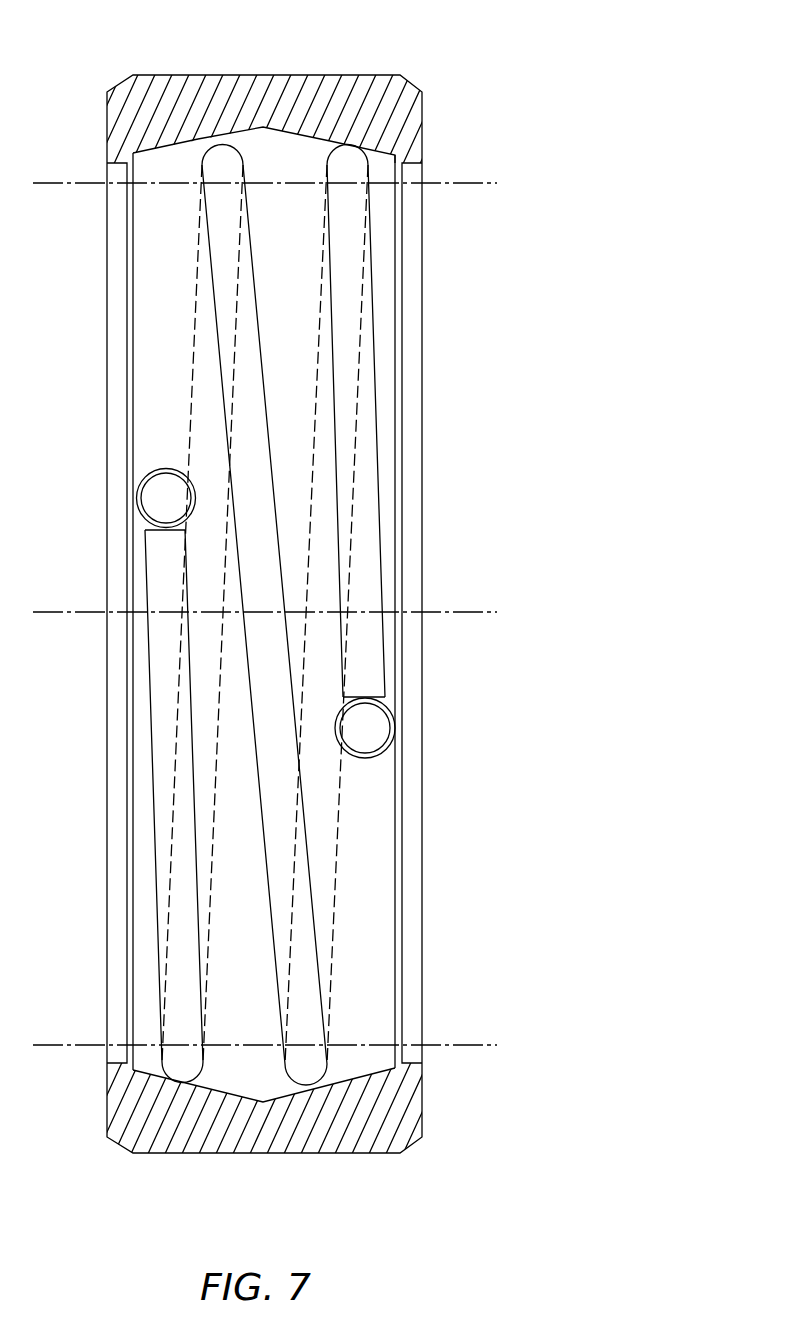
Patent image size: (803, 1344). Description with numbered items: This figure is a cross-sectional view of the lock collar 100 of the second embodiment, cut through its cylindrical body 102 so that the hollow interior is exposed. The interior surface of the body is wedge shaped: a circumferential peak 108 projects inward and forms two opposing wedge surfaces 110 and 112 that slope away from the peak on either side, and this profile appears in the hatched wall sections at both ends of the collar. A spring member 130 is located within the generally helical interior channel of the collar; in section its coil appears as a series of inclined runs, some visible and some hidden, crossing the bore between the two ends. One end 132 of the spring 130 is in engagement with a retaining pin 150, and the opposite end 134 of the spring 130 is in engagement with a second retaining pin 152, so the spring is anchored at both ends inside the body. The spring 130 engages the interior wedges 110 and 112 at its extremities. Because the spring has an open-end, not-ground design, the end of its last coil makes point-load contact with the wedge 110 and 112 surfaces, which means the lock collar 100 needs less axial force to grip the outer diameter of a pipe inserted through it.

The lock collar 100 is at (576, 52).
The cylindrical body 102 is at (296, 72).
The circumferential peak 108 is at (257, 126).
The wedge surface 110 is at (167, 145).
The wedge surface 112 is at (323, 137).
The spring member 130 is at (375, 204).
The end of spring 132 is at (143, 530).
The end of spring 134 is at (386, 700).
The retaining pin 150 is at (160, 492).
The retaining pin 152 is at (394, 740).